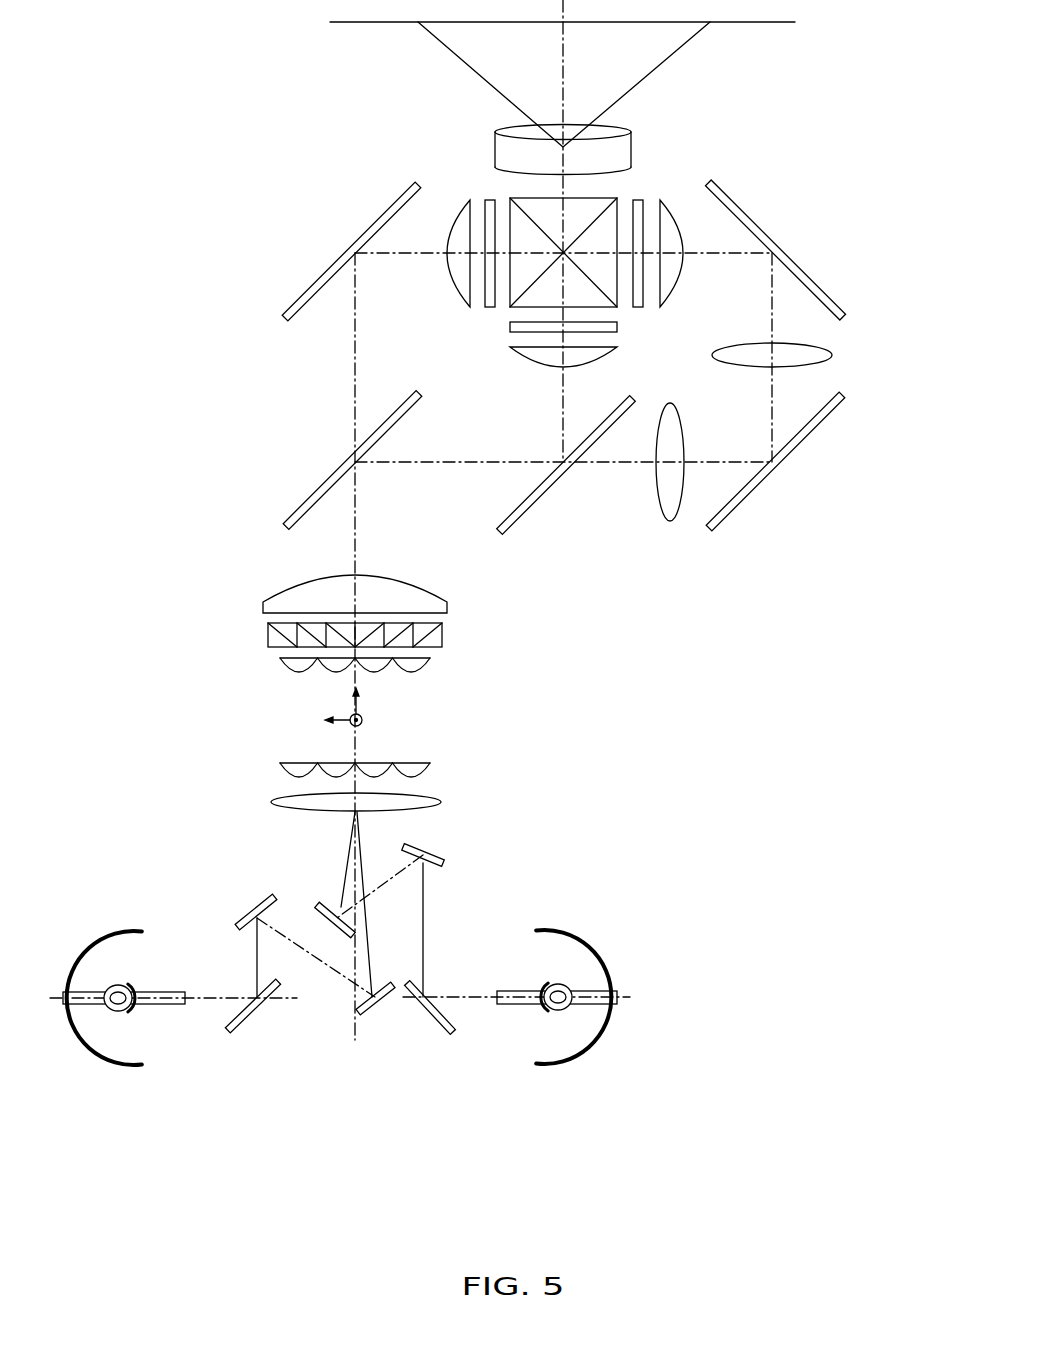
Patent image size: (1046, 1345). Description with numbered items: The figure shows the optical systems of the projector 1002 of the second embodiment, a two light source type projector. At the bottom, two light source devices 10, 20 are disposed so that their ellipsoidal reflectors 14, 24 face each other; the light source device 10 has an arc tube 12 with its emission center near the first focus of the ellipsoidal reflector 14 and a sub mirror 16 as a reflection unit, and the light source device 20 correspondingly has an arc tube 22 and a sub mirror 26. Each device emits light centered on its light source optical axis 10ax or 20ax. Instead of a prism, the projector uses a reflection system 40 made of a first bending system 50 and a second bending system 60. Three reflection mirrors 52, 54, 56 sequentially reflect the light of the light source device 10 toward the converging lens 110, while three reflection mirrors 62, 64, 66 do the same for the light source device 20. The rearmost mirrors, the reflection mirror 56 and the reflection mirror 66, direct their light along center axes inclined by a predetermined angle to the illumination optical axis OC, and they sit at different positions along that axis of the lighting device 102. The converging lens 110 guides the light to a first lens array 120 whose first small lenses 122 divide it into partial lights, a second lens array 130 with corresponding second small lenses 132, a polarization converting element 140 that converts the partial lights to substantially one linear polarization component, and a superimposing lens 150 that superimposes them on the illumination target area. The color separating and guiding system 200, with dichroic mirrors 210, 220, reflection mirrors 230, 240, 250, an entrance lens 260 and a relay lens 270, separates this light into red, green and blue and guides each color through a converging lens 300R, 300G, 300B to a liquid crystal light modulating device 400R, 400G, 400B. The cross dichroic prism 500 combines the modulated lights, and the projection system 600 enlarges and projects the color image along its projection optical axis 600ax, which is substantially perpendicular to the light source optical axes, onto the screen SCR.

The projector 1002 is at (226, 185).
The screen SCR is at (762, 23).
The projection optical axis 600ax is at (566, 116).
The projection system 600 is at (632, 145).
The cross dichroic prism 500 is at (517, 198).
The liquid crystal light modulating device 400R is at (488, 198).
The liquid crystal light modulating device 400G is at (617, 327).
The liquid crystal light modulating device 400B is at (638, 198).
The converging lens 300R is at (466, 308).
The converging lens 300G is at (506, 348).
The converging lens 300B is at (664, 198).
The color separating and guiding system 200 is at (593, 380).
The dichroic mirror 210 is at (306, 504).
The dichroic mirror 220 is at (534, 510).
The reflection mirror 230 is at (304, 296).
The reflection mirror 240 is at (738, 511).
The reflection mirror 250 is at (762, 228).
The entrance lens 260 is at (668, 521).
The relay lens 270 is at (834, 355).
The lighting device 102 is at (368, 707).
The illumination optical axis OC is at (355, 753).
The superimposing lens 150 is at (447, 608).
The polarization converting element 140 is at (442, 636).
The second lens array 130 is at (366, 672).
The second small lenses 132 is at (288, 666).
The first lens array 120 is at (366, 779).
The first small lenses 122 is at (288, 771).
The converging lens 110 is at (440, 800).
The reflection system 40 is at (340, 1002).
The first bending system 50 is at (222, 999).
The reflection mirror 52 is at (255, 1013).
The reflection mirror 54 is at (248, 914).
The reflection mirror 56 is at (375, 1013).
The second bending system 60 is at (461, 986).
The reflection mirror 62 is at (416, 1013).
The reflection mirror 64 is at (445, 861).
The reflection mirror 66 is at (321, 906).
The light source optical axis 10ax is at (215, 996).
The light source optical axis 20ax is at (475, 996).
The light source device 10 is at (126, 1029).
The arc tube 12 is at (118, 1012).
The ellipsoidal reflector 14 is at (101, 1044).
The sub mirror 16 is at (131, 1013).
The light source device 20 is at (553, 1029).
The arc tube 22 is at (558, 1012).
The ellipsoidal reflector 24 is at (583, 1043).
The sub mirror 26 is at (547, 1008).